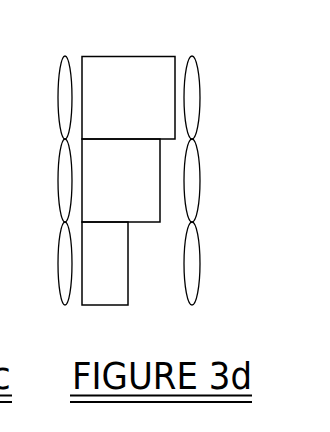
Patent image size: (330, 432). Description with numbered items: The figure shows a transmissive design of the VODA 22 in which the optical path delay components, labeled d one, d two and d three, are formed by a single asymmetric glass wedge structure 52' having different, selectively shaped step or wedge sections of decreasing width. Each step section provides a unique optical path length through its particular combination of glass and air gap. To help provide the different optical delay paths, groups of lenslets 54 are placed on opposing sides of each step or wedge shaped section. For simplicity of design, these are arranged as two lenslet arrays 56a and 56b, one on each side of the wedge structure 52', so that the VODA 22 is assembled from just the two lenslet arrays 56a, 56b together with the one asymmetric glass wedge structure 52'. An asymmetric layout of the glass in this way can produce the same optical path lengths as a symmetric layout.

The VODA 22 is at (95, 154).
The asymmetric glass wedge structure 52' is at (128, 74).
The lenslets 54 is at (36, 180).
The lenslet array 56a is at (36, 199).
The lenslet array 56b is at (218, 164).